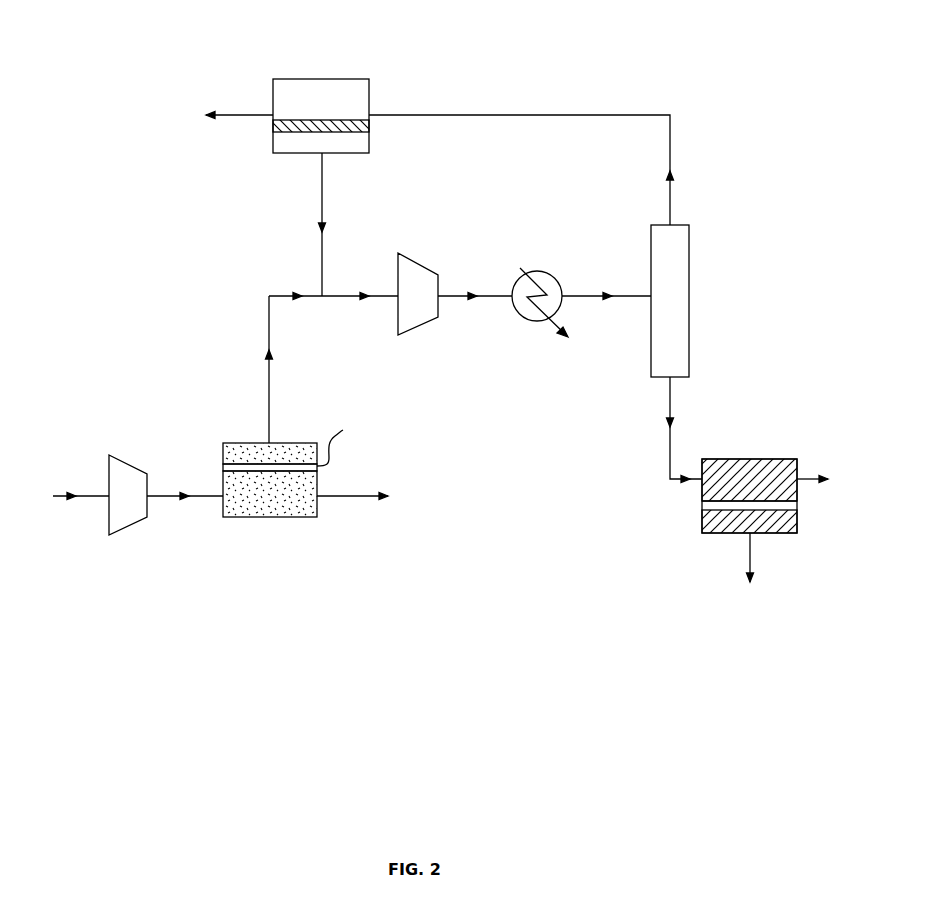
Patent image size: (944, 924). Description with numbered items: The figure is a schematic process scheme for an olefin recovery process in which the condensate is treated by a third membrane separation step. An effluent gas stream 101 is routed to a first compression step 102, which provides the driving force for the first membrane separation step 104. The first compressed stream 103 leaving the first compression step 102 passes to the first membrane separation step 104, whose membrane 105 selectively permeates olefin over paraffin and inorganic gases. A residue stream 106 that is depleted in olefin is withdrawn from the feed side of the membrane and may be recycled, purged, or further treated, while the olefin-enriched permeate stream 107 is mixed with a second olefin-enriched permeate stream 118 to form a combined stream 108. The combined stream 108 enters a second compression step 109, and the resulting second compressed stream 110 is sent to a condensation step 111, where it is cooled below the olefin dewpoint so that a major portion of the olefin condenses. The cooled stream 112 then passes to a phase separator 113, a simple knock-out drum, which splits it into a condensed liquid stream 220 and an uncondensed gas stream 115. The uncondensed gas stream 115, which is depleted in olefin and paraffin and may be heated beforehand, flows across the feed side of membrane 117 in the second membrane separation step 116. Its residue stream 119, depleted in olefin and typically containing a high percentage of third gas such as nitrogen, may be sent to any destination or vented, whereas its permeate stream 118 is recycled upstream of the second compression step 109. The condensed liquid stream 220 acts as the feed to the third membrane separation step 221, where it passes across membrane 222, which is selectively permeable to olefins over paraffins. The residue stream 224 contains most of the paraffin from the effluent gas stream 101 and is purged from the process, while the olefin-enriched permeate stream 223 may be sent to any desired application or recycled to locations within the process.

The effluent gas stream 101 is at (81, 508).
The first compression step 102 is at (125, 525).
The first compressed stream 103 is at (185, 508).
The first membrane separation step 104 is at (282, 517).
The membrane 105 is at (345, 440).
The residue stream 106 is at (371, 496).
The permeate stream 107 is at (253, 369).
The combined stream 108 is at (333, 308).
The second compression step 109 is at (415, 327).
The second compressed stream 110 is at (475, 308).
The condensation step 111 is at (558, 270).
The cooled stream 112 is at (606, 308).
The phase separator 113 is at (689, 270).
The uncondensed gas stream 115 is at (540, 170).
The second membrane separation step 116 is at (330, 79).
The membrane 117 is at (369, 127).
The permeate stream 118 is at (303, 224).
The residue stream 119 is at (222, 115).
The condensed liquid stream 220 is at (664, 430).
The third membrane separation step 221 is at (758, 459).
The membrane 222 is at (702, 504).
The permeate stream 223 is at (750, 573).
The residue stream 224 is at (831, 479).